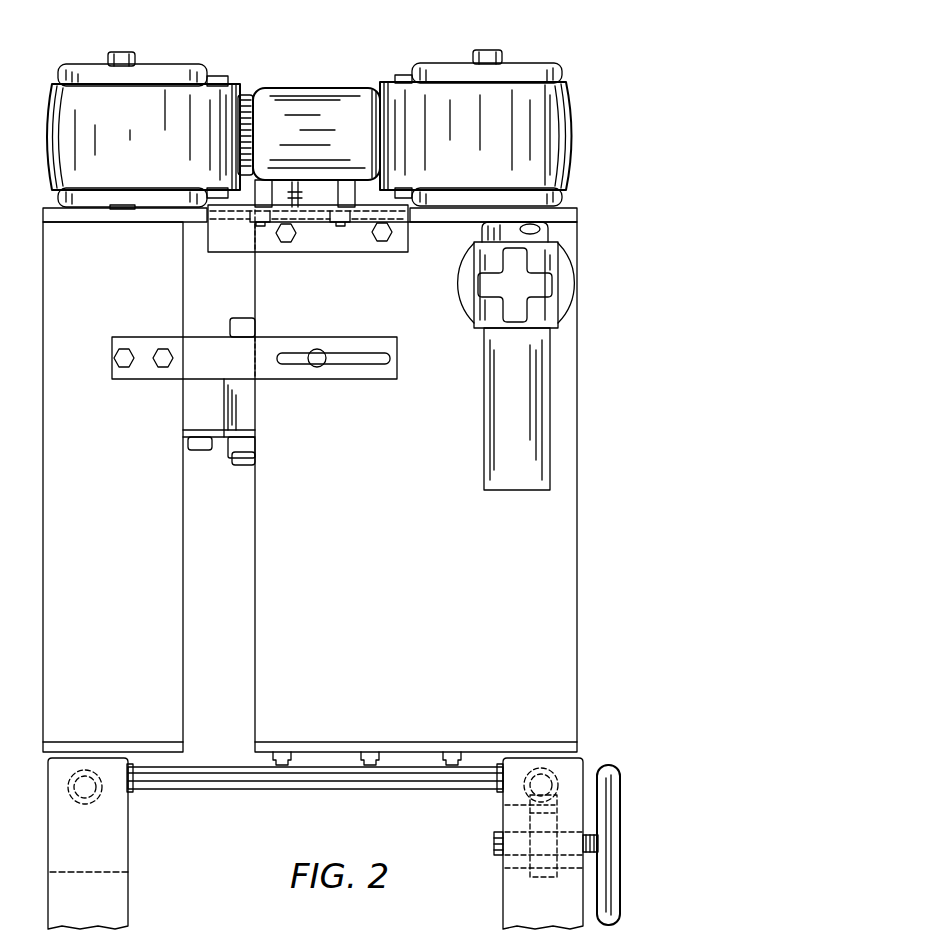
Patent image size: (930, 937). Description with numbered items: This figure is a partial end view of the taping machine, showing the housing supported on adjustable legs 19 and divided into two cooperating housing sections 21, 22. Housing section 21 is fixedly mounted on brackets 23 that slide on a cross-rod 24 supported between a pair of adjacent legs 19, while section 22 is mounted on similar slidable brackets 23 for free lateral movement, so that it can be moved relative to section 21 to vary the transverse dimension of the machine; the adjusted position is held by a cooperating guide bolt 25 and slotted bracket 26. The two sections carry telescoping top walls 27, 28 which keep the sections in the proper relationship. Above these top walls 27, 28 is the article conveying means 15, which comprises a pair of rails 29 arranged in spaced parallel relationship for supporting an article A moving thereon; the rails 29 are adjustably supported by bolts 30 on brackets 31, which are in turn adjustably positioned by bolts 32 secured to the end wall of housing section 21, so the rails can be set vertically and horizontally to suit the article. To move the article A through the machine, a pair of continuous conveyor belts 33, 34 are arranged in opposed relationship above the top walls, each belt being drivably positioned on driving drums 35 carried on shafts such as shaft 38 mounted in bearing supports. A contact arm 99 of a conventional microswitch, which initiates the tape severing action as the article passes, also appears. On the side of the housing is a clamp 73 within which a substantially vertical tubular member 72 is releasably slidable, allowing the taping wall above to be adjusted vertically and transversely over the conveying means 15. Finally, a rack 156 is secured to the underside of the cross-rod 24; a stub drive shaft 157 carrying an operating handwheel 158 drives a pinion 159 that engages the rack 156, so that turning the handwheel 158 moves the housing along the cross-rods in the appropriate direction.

The article conveying means 15 is at (334, 55).
The shaft 38 is at (136, 56).
The driving drum 35 is at (62, 80).
The conveyor belt 34 is at (46, 144).
The conveyor belt 33 is at (576, 114).
The article A is at (288, 88).
The contact arm 99 is at (302, 194).
The top wall 28 is at (48, 210).
The top wall 27 is at (572, 210).
The rail 29 is at (262, 196).
The bolt 30 is at (352, 232).
The bracket 31 is at (288, 252).
The bolt 32 is at (388, 243).
The clamp 73 is at (484, 308).
The tubular member 72 is at (488, 379).
The guide bolt 25 is at (317, 368).
The slotted bracket 26 is at (375, 368).
The housing section 22 is at (48, 608).
The housing section 21 is at (578, 601).
The cross-rod 24 is at (100, 798).
The bracket 23 is at (128, 876).
The rack 156 is at (505, 805).
The stub drive shaft 157 is at (494, 834).
The handwheel 158 is at (612, 838).
The pinion 159 is at (544, 877).
The adjustable leg 19 is at (506, 906).